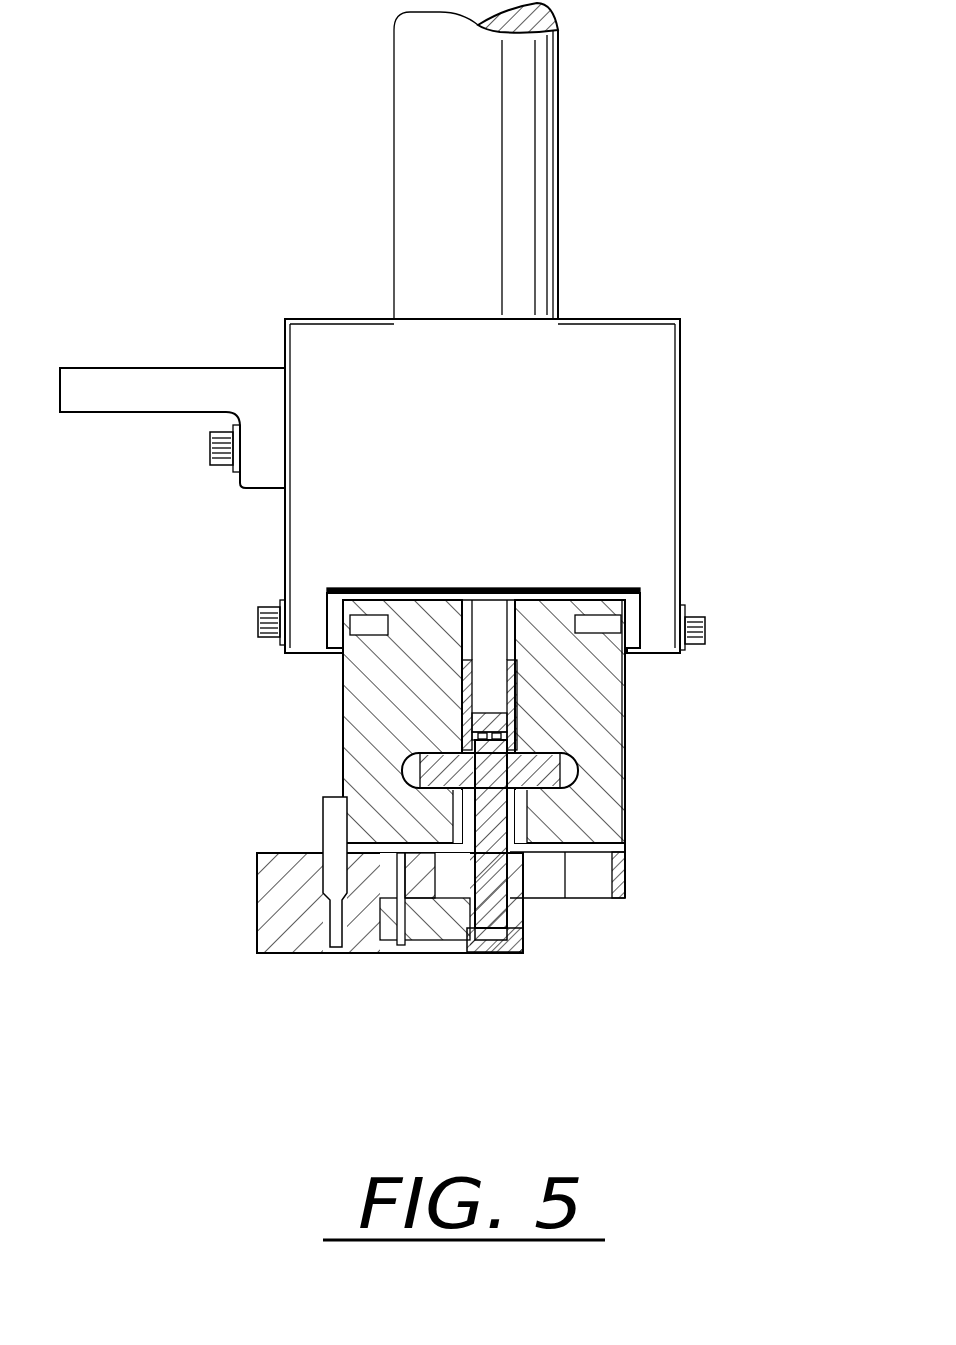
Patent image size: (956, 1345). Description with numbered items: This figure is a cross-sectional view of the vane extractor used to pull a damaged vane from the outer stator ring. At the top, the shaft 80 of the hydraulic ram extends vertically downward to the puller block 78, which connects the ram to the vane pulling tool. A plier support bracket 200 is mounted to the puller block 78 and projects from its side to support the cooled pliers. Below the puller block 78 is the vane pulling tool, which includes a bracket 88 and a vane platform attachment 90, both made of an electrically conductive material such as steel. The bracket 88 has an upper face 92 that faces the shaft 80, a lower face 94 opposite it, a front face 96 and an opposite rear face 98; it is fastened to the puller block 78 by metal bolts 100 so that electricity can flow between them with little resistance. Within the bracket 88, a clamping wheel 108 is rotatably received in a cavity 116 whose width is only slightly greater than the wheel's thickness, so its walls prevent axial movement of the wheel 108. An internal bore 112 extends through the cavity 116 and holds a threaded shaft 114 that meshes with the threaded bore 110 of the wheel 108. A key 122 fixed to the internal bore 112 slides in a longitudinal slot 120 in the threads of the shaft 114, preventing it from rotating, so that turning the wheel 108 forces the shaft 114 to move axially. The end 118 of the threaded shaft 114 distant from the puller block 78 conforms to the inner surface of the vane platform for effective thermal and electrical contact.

The puller block 78 is at (568, 430).
The shaft 80 is at (532, 203).
The bracket 88 is at (630, 790).
The vane platform attachment 90 is at (257, 920).
The upper face 92 is at (568, 600).
The lower face 94 is at (567, 855).
The front face 96 is at (345, 740).
The rear face 98 is at (630, 747).
The metal bolts 100 is at (257, 625).
The clamping wheel 108 is at (567, 750).
The threaded bore 110 is at (405, 772).
The internal bore 112 is at (513, 625).
The threaded shaft 114 is at (510, 824).
The cavity 116 is at (347, 782).
The end of the threaded shaft 118 is at (507, 920).
The slot 120 is at (325, 826).
The key 122 is at (462, 690).
The plier support bracket 200 is at (148, 383).